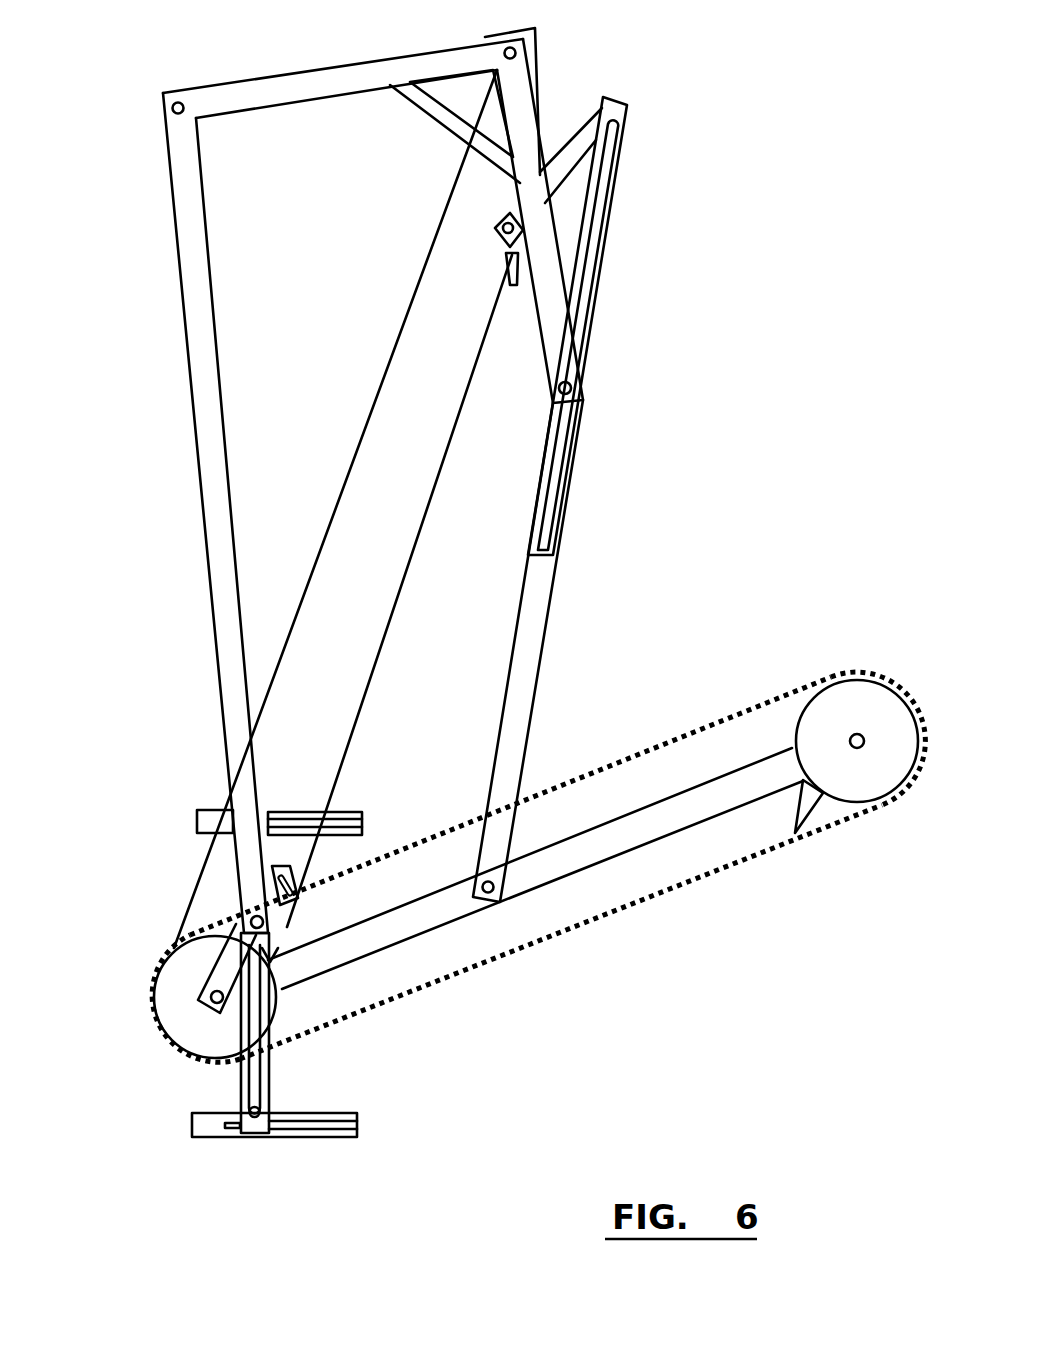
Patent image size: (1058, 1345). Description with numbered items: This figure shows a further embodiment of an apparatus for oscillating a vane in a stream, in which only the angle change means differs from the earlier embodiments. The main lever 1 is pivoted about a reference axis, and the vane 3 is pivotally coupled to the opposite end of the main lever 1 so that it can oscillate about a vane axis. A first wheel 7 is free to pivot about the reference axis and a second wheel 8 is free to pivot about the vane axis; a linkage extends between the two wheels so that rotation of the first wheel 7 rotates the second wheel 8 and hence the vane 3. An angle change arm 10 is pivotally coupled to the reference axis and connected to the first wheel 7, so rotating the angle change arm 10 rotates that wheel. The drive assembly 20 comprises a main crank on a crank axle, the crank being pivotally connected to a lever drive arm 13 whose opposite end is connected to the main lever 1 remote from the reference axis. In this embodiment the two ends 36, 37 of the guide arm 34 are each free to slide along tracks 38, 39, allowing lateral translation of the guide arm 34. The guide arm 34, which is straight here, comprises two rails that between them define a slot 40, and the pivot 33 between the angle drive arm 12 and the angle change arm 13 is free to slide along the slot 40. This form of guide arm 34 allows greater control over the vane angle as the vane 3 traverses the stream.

The main lever 1 is at (688, 815).
The vane 3 is at (818, 805).
The first wheel 7 is at (175, 1000).
The second wheel 8 is at (860, 710).
The angle change arm 10 is at (220, 963).
The angle drive arm 12 is at (218, 440).
The lever drive arm 13 is at (522, 655).
The drive assembly 20 is at (668, 132).
The pivot 33 is at (255, 918).
The guide arm 34 is at (277, 970).
The end of guide arm 36 is at (270, 800).
The end of guide arm 37 is at (258, 1127).
The track 38 is at (335, 820).
The track 39 is at (320, 1137).
The slot 40 is at (265, 1008).